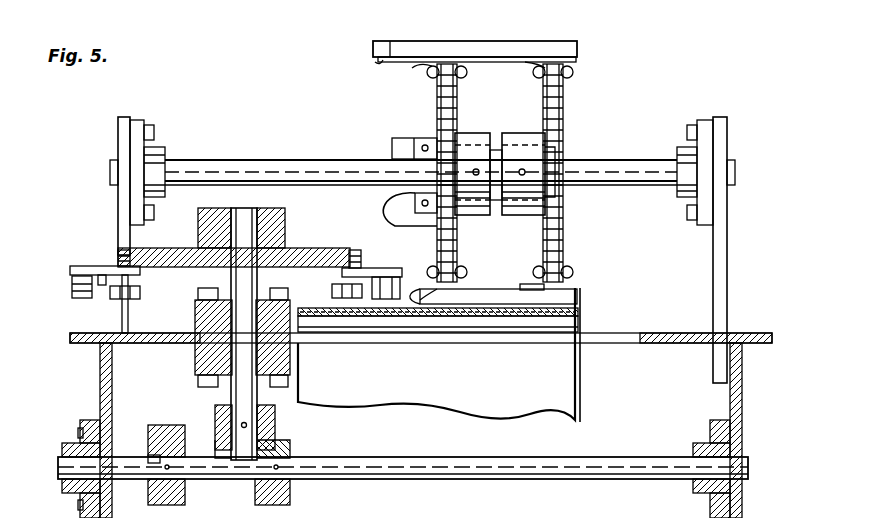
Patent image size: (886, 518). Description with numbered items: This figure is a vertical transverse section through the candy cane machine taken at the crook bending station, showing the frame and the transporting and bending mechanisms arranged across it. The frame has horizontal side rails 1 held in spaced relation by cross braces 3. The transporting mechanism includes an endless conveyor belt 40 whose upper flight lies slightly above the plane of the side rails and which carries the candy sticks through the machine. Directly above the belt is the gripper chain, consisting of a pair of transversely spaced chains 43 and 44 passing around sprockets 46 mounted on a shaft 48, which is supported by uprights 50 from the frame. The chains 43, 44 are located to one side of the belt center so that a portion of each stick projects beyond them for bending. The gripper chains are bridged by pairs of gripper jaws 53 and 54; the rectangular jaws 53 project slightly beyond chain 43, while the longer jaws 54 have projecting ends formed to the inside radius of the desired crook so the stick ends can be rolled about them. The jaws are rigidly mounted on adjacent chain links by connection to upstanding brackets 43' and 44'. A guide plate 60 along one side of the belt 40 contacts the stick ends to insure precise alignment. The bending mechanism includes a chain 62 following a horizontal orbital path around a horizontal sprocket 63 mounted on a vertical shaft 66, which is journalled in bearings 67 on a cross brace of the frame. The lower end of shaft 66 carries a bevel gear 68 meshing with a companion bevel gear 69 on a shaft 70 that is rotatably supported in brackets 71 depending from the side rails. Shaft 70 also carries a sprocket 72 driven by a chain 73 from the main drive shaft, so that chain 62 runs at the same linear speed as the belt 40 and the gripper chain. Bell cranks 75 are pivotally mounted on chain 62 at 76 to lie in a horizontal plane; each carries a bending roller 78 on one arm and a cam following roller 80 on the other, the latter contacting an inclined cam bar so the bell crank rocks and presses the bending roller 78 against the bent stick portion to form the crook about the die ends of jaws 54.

The side rails 1 is at (82, 343).
The cross braces 3 is at (682, 333).
The endless conveyor belt 40 is at (578, 292).
The chain 43 is at (571, 173).
The upstanding bracket 43' is at (521, 176).
The chain 44 is at (430, 173).
The upstanding bracket 44' is at (476, 184).
The sprockets 46 is at (548, 118).
The shaft 48 is at (637, 162).
The uprights 50 is at (118, 222).
The gripper jaws 53 is at (468, 45).
The gripper jaws 54 is at (375, 60).
The guide plate 60 is at (580, 312).
The chain 62 is at (354, 250).
The sprocket 63 is at (316, 248).
The shaft 66 is at (231, 288).
The bearings 67 is at (205, 368).
The bevel gear 68 is at (285, 446).
The bevel gear 69 is at (285, 500).
The shaft 70 is at (440, 458).
The brackets 71 is at (100, 404).
The sprocket 72 is at (172, 440).
The chain 73 is at (165, 506).
The bell cranks 75 is at (110, 266).
The pivot 76 is at (108, 288).
The bending roller 78 is at (414, 266).
The cam following roller 80 is at (332, 291).